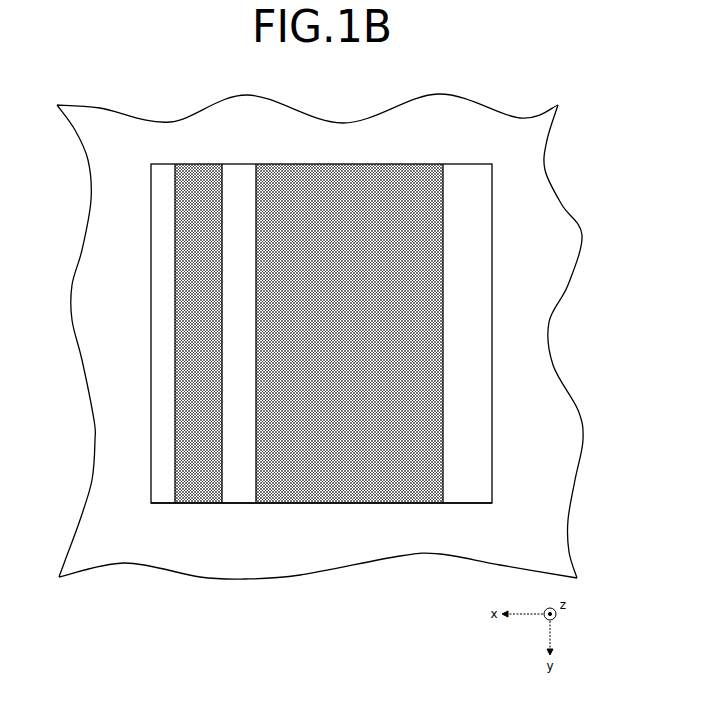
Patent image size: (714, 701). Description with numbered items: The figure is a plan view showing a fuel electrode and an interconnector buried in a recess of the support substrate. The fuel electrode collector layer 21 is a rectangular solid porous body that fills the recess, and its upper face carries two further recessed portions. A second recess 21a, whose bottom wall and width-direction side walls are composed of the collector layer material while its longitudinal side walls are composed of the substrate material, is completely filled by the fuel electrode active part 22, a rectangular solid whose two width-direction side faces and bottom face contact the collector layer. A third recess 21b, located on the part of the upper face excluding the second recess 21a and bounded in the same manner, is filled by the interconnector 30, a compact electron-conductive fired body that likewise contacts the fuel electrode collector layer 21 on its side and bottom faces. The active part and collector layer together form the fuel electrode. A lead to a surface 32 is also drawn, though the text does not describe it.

The fuel electrode collector layer 21 is at (155, 432).
The second recess 21a is at (256, 487).
The third recess 21b is at (175, 487).
The fuel electrode active part 22 is at (342, 340).
The interconnector 30 is at (190, 340).
The lower surface 32 is at (317, 503).